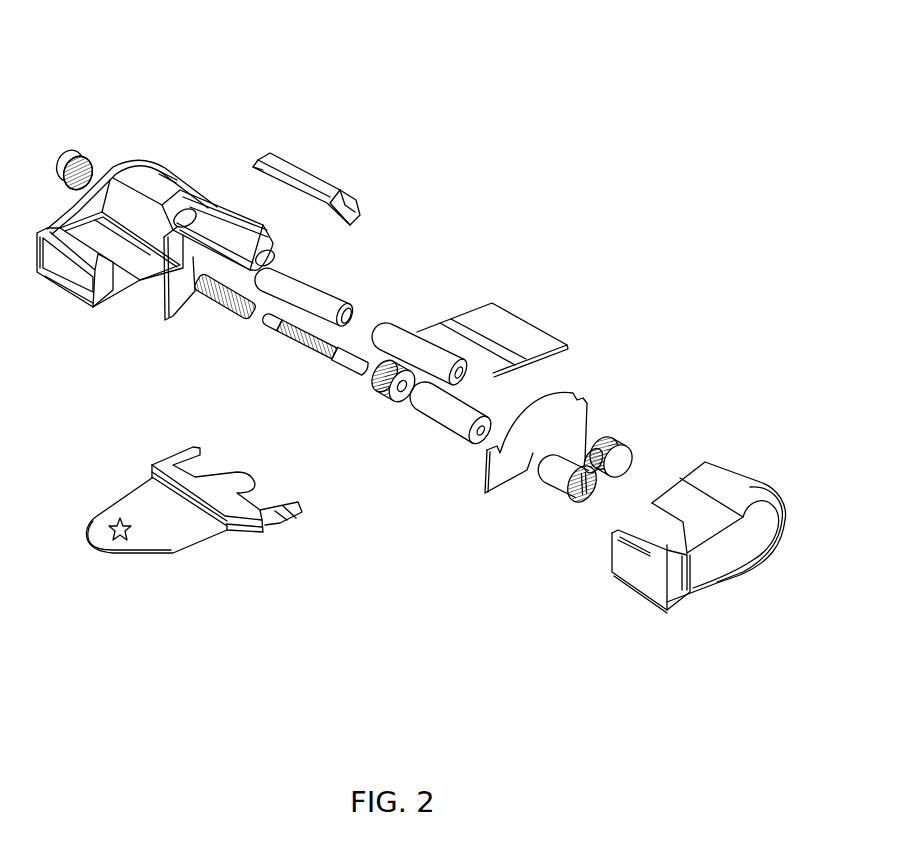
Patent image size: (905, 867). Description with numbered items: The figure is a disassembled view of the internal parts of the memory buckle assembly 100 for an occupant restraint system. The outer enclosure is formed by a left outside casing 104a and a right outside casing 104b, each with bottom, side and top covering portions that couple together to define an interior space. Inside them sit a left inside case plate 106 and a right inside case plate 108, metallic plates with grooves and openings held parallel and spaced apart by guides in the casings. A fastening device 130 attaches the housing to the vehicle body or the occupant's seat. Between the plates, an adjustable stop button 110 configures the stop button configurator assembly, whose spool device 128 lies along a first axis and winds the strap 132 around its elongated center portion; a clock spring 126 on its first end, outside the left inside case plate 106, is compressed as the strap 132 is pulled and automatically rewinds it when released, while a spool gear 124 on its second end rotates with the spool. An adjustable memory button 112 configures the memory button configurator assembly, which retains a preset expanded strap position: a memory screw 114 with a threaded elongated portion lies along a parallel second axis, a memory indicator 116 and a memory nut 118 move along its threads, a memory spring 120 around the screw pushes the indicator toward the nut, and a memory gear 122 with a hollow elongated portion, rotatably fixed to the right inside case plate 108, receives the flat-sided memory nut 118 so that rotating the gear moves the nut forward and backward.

The memory buckle assembly 100 is at (437, 86).
The left outside casing 104a is at (137, 160).
The right outside casing 104b is at (733, 477).
The left inside case plate 106 is at (162, 295).
The right inside case plate 108 is at (587, 403).
The adjustable stop button 110 is at (327, 180).
The adjustable memory button 112 is at (211, 200).
The memory screw 114 is at (300, 340).
The memory indicator 116 is at (373, 397).
The memory nut 118 is at (427, 420).
The memory spring 120 is at (237, 300).
The memory gear 122 is at (560, 497).
The spool gear 124 is at (613, 437).
The clock spring 126 is at (68, 155).
The spool device 128 is at (328, 290).
The fastening device 130 is at (90, 540).
The strap 132 is at (523, 320).